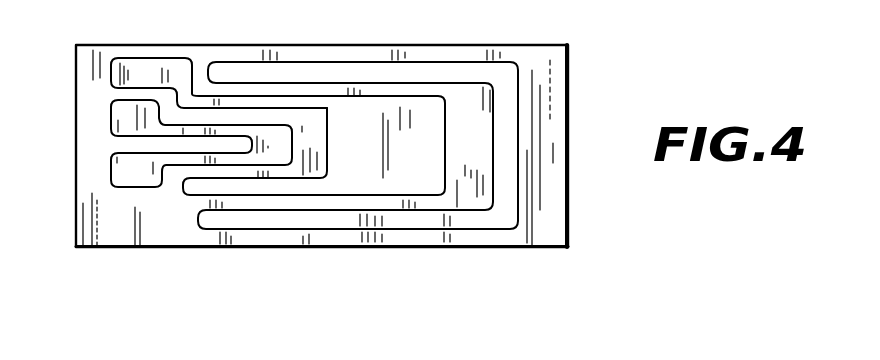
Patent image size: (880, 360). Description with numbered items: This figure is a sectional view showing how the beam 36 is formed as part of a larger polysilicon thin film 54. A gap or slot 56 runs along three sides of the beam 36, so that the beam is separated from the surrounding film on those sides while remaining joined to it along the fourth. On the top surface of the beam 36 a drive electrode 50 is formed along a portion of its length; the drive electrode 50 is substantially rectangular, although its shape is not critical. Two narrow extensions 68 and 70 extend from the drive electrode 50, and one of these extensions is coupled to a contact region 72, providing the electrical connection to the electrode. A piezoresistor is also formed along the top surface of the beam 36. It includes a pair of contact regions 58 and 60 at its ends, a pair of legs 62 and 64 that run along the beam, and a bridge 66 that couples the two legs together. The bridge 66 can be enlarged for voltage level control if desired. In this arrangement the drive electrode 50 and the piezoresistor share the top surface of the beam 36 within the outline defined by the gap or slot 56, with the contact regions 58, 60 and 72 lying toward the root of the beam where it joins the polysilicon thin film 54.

The beam 36 is at (464, 190).
The drive electrode 50 is at (416, 144).
The polysilicon thin film 54 is at (563, 142).
The gap or slot 56 is at (430, 66).
The contact region 58 is at (130, 119).
The contact region 60 is at (130, 170).
The leg 62 is at (210, 130).
The leg 64 is at (188, 157).
The bridge 66 is at (278, 140).
The extension 68 is at (303, 102).
The extension 70 is at (258, 188).
The contact region 72 is at (138, 72).